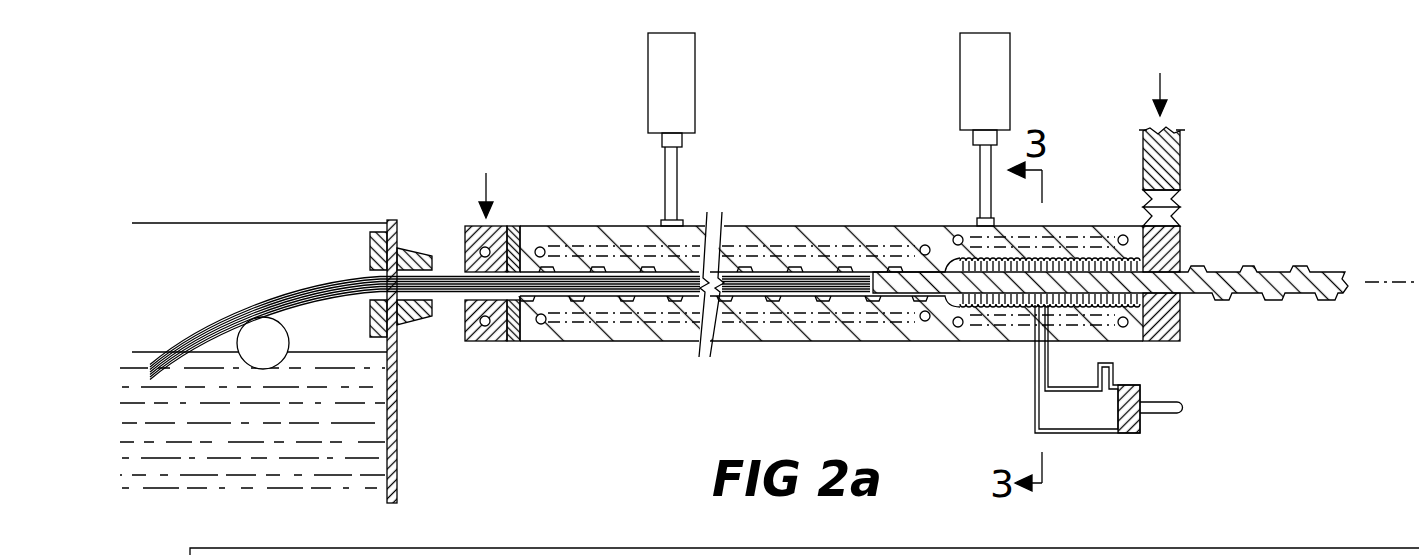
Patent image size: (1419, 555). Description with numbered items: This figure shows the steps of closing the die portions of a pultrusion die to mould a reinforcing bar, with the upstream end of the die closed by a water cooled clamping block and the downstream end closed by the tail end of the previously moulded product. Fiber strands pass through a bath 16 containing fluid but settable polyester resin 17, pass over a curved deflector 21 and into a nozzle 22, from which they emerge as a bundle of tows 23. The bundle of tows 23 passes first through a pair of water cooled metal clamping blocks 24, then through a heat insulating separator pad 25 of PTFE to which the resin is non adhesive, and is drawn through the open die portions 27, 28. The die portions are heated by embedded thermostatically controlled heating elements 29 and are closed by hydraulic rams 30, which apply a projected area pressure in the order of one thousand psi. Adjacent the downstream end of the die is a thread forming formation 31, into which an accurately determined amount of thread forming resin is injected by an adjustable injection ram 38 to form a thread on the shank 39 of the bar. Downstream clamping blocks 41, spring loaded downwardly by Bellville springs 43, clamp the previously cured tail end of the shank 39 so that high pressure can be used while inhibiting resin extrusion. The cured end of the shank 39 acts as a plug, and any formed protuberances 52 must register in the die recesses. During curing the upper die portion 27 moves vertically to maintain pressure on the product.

The bath 16 is at (393, 436).
The polyester resin 17 is at (228, 450).
The curved deflector 21 is at (256, 337).
The nozzle 22 is at (405, 248).
The bundle of tows 23 is at (446, 279).
The metal clamping blocks 24 is at (489, 332).
The heat insulating separator pad 25 is at (513, 331).
The upper die portion 27 is at (847, 232).
The lower die portion 28 is at (824, 343).
The heating elements 29 is at (547, 326).
The hydraulic rams 30 is at (978, 101).
The thread forming formation 31 is at (1092, 216).
The adjustable injection ram 38 is at (1128, 408).
The shank 39 is at (1248, 273).
The downstream clamping blocks 41 is at (1170, 250).
The Bellville springs 43 is at (1180, 202).
The protuberances 52 is at (1273, 299).